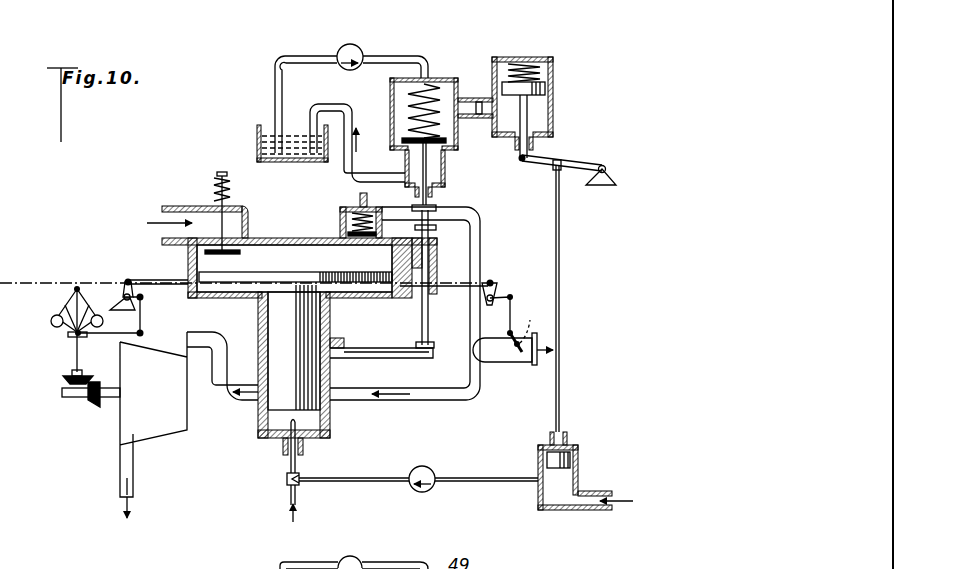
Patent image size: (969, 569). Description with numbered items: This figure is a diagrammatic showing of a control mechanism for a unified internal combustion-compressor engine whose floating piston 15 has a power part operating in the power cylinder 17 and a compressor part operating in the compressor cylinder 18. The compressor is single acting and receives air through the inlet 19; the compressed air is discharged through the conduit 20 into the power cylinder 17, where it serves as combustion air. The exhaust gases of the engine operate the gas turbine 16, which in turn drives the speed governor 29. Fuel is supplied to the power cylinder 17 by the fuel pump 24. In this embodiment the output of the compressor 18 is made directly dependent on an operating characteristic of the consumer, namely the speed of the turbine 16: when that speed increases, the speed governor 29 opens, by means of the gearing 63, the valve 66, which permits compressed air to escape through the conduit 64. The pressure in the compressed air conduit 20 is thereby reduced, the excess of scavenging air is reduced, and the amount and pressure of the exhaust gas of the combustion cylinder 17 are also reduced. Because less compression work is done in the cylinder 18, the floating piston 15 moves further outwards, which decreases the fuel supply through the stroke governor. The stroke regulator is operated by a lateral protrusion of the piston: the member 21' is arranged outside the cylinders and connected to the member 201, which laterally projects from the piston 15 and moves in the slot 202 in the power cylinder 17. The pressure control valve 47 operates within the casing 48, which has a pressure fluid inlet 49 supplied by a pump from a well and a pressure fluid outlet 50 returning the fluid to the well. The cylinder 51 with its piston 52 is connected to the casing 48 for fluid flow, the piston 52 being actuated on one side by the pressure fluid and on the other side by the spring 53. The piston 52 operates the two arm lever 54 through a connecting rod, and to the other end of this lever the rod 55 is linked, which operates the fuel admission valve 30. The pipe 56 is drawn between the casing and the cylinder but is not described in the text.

The floating piston 15 is at (285, 315).
The gas turbine 16 is at (189, 425).
The power cylinder 17 is at (276, 426).
The compressor cylinder 18 is at (299, 268).
The inlet 19 is at (178, 212).
The conduit 20 is at (372, 212).
The member 21' is at (437, 276).
The fuel pump 24 is at (427, 517).
The speed governor 29 is at (68, 305).
The fuel valve 30 is at (576, 463).
The pressure control valve 47 is at (447, 152).
The casing 48 is at (398, 91).
The pressure fluid inlet 49 is at (432, 66).
The pressure fluid outlet 50 is at (350, 177).
The cylinder 51 is at (540, 128).
The piston 52 is at (540, 93).
The spring 53 is at (540, 75).
The two arm lever 54 is at (545, 163).
The rod 55 is at (560, 250).
The connecting pipe 56 is at (492, 106).
The gearing 63 is at (163, 282).
The conduit 64 is at (533, 323).
The valve 66 is at (515, 362).
The member 201 is at (374, 355).
The slot 202 is at (336, 336).